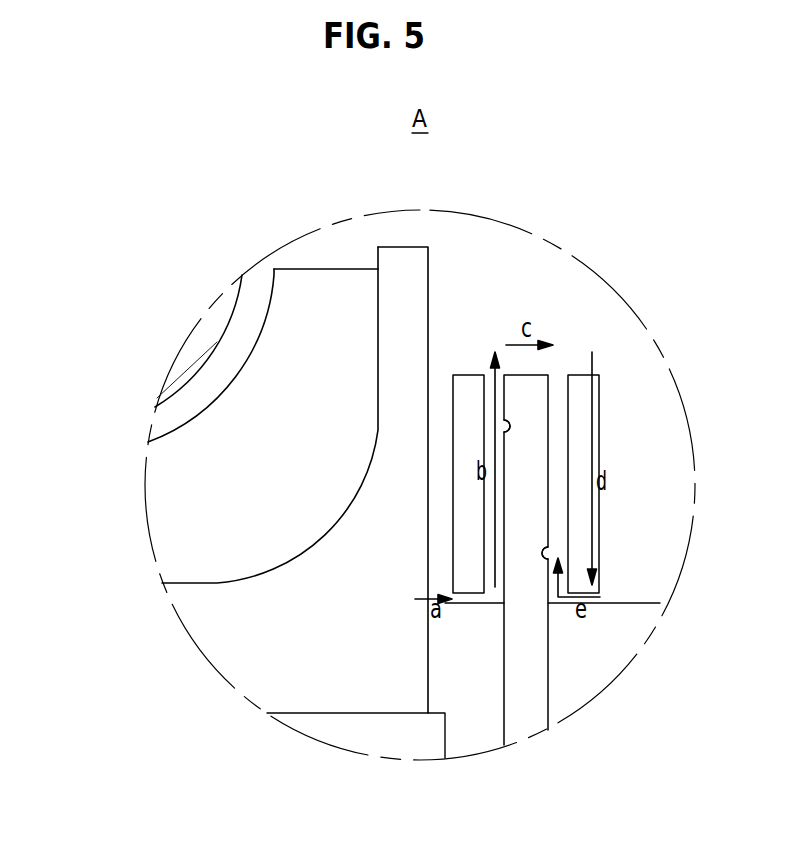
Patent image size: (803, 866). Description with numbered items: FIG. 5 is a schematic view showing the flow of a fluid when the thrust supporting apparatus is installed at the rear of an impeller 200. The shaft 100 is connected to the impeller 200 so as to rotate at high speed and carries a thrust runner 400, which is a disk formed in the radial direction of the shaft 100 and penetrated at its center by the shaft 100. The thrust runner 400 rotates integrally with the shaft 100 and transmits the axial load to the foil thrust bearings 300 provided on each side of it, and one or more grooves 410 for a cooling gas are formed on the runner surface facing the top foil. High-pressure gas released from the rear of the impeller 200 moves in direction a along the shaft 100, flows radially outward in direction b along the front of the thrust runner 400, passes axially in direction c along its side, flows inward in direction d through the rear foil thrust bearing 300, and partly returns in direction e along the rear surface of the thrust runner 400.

The shaft 100 is at (602, 655).
The impeller 200 is at (338, 553).
The foil thrust bearings 300 is at (472, 383).
The thrust runner 400 is at (528, 713).
The grooves 410 is at (543, 553).